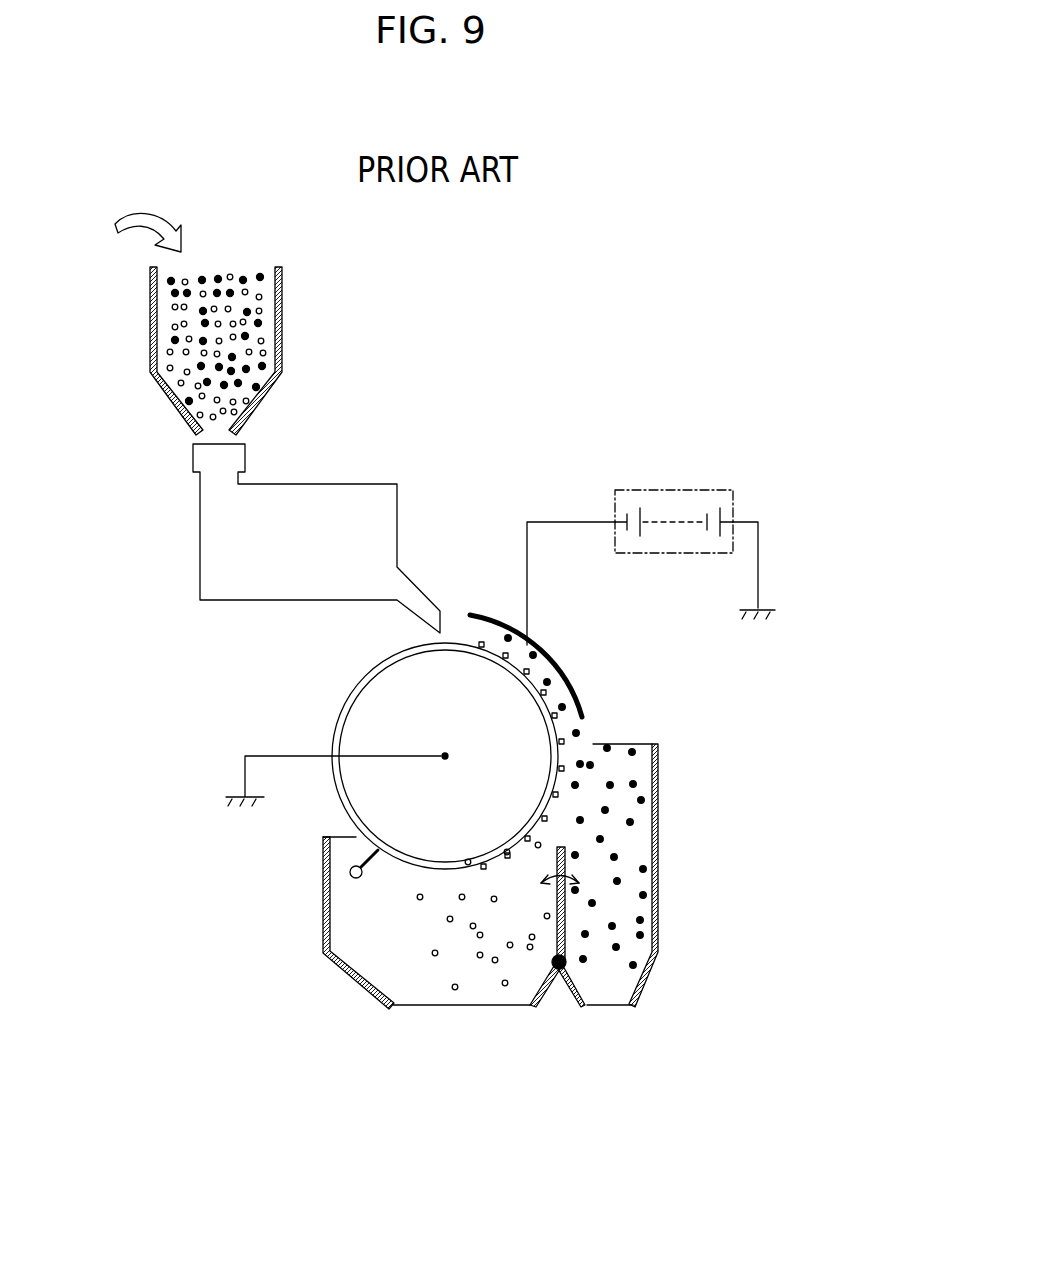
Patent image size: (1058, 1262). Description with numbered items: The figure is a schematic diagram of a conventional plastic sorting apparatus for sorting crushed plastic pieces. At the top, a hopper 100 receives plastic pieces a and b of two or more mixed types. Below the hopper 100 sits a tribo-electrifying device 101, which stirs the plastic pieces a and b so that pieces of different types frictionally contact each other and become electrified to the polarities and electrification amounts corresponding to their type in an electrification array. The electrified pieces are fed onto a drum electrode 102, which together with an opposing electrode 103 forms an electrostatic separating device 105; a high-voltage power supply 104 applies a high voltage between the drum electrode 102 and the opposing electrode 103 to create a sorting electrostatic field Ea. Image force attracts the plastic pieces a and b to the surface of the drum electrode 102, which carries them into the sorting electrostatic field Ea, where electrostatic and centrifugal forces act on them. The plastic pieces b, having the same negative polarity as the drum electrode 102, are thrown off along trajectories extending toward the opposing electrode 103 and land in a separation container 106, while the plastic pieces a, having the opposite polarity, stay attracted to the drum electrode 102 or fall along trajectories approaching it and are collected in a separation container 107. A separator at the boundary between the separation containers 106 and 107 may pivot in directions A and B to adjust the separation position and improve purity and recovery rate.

The hopper 100 is at (150, 352).
The tribo-electrifying device 101 is at (340, 500).
The drum electrode 102 is at (343, 710).
The opposing electrode 103 is at (553, 650).
The high-voltage power supply 104 is at (697, 490).
The electrostatic separating device 105 is at (684, 722).
The separation container 106 is at (658, 835).
The separation container 107 is at (387, 945).
The plastic pieces a is at (268, 301).
The plastic pieces b is at (634, 897).
The sorting electrostatic field Ea is at (562, 708).
The pivot direction A is at (528, 904).
The pivot direction B is at (583, 904).